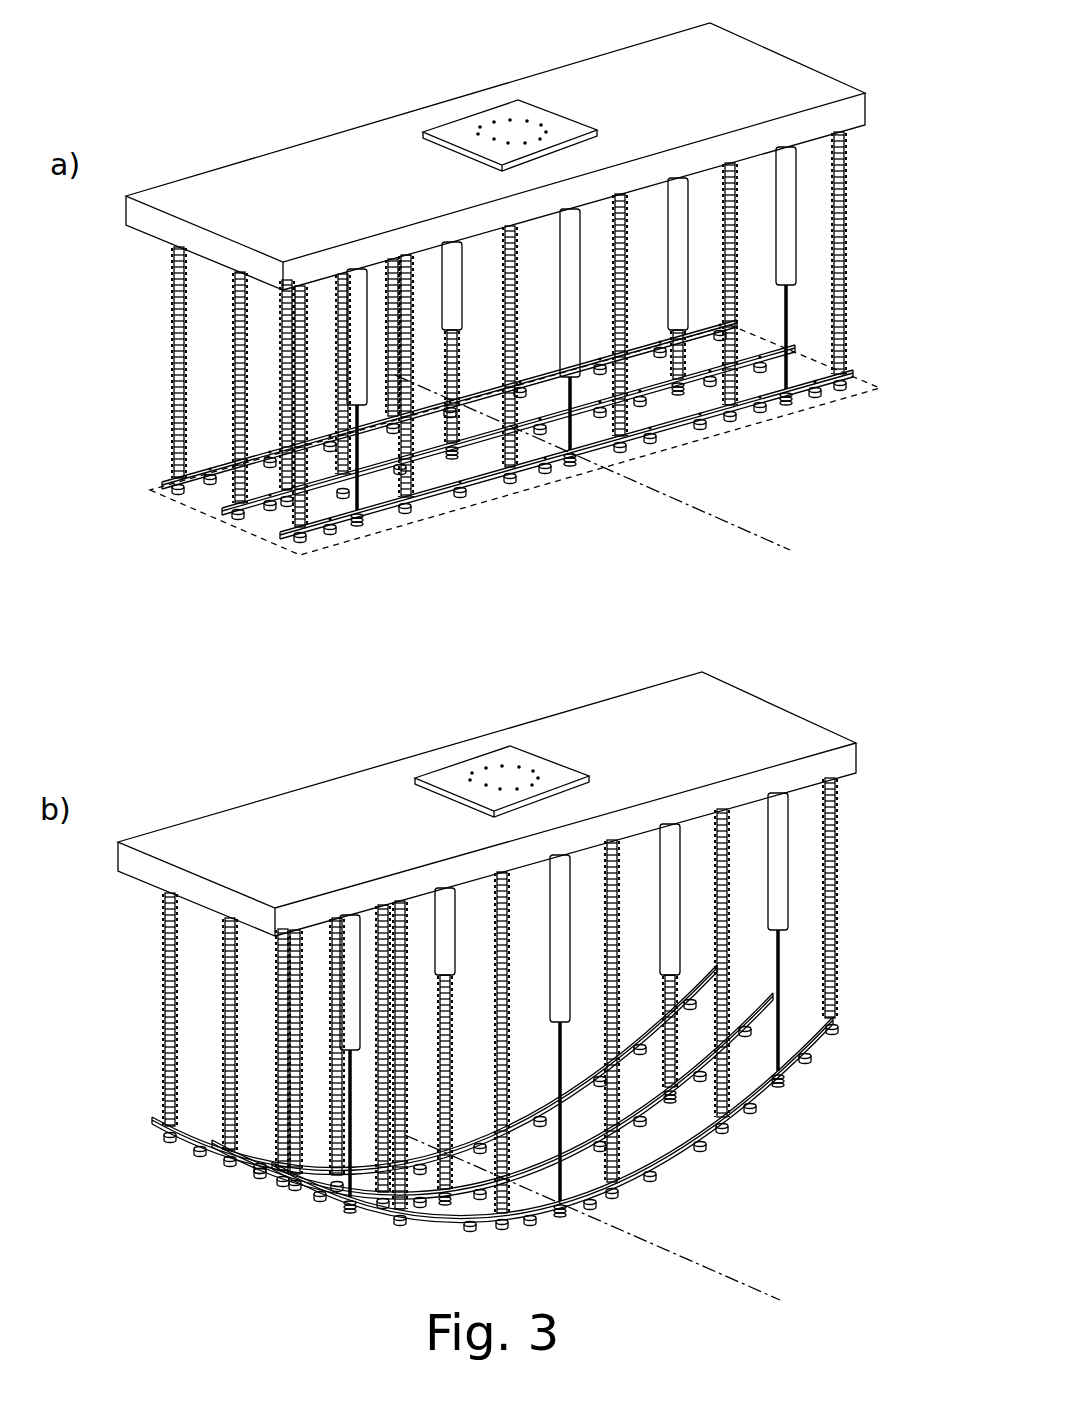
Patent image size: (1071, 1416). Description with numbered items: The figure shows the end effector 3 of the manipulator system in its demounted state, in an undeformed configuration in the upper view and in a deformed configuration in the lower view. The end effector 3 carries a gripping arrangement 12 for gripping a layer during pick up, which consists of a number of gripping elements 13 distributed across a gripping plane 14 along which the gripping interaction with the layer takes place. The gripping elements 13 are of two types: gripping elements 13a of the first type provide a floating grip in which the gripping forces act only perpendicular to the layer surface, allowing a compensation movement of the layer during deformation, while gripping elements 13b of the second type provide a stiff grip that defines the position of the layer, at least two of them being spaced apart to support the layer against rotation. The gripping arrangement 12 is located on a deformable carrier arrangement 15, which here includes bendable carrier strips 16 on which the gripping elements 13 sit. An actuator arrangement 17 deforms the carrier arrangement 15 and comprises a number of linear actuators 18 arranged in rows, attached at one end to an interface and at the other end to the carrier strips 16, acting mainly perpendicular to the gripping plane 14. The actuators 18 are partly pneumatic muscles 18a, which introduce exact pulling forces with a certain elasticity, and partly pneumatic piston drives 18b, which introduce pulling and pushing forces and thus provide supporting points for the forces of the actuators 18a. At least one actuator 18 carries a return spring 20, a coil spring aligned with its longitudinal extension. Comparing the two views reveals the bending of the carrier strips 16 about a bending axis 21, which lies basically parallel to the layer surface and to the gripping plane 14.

The end effector 3 is at (203, 110).
The gripping arrangement 12 is at (170, 573).
The gripping elements 13 is at (535, 807).
The gripping element of the first type 13a is at (578, 458).
The gripping element of the second type 13b is at (808, 394).
The gripping plane 14 is at (878, 386).
The carrier arrangement 15 is at (165, 530).
The carrier strips 16 is at (284, 540).
The actuator arrangement 17 is at (150, 365).
The actuators 18 is at (599, 652).
The actuator of the type of a pneumatic muscle 18a is at (565, 458).
The actuator of the type of a pneumatic piston drive 18b is at (682, 190).
The return spring 20 is at (174, 292).
The bending axis 21 is at (775, 530).